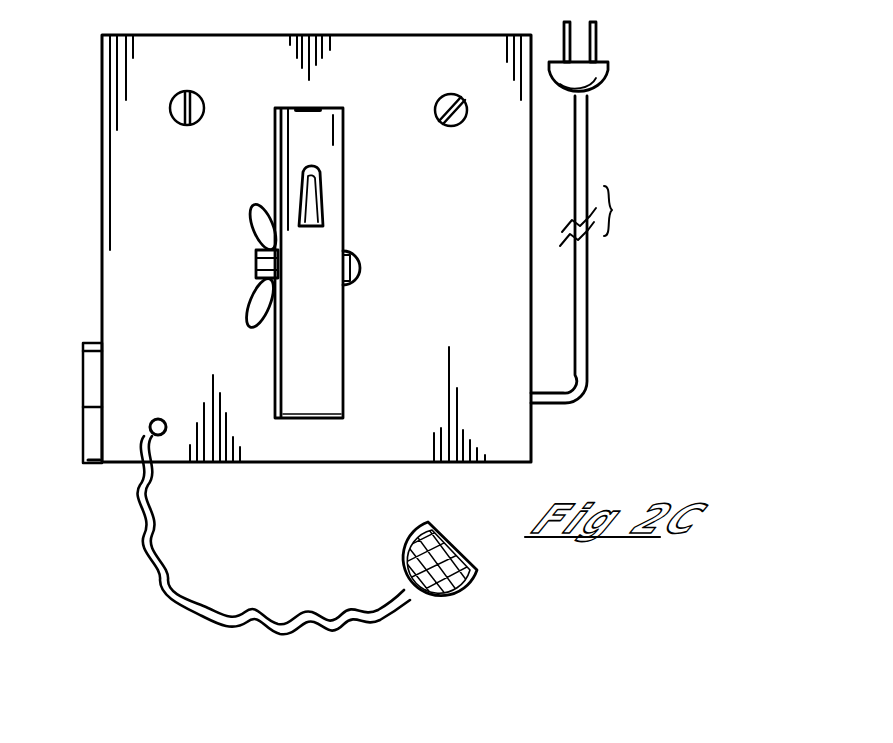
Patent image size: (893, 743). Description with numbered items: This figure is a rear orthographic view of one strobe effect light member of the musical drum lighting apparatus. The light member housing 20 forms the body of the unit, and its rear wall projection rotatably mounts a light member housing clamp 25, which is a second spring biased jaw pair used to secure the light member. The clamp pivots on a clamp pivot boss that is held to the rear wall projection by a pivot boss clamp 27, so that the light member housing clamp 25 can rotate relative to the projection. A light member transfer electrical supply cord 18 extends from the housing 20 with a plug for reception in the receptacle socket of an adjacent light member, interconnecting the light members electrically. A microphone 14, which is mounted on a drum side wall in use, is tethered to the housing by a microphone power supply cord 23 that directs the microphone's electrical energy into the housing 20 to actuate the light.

The light member housing 20 is at (102, 56).
The light member housing clamp 25 is at (327, 240).
The pivot boss clamp 27 is at (256, 278).
The light member transfer electrical supply cord 18 is at (584, 300).
The microphone power supply cord 23 is at (300, 606).
The microphone 14 is at (480, 572).